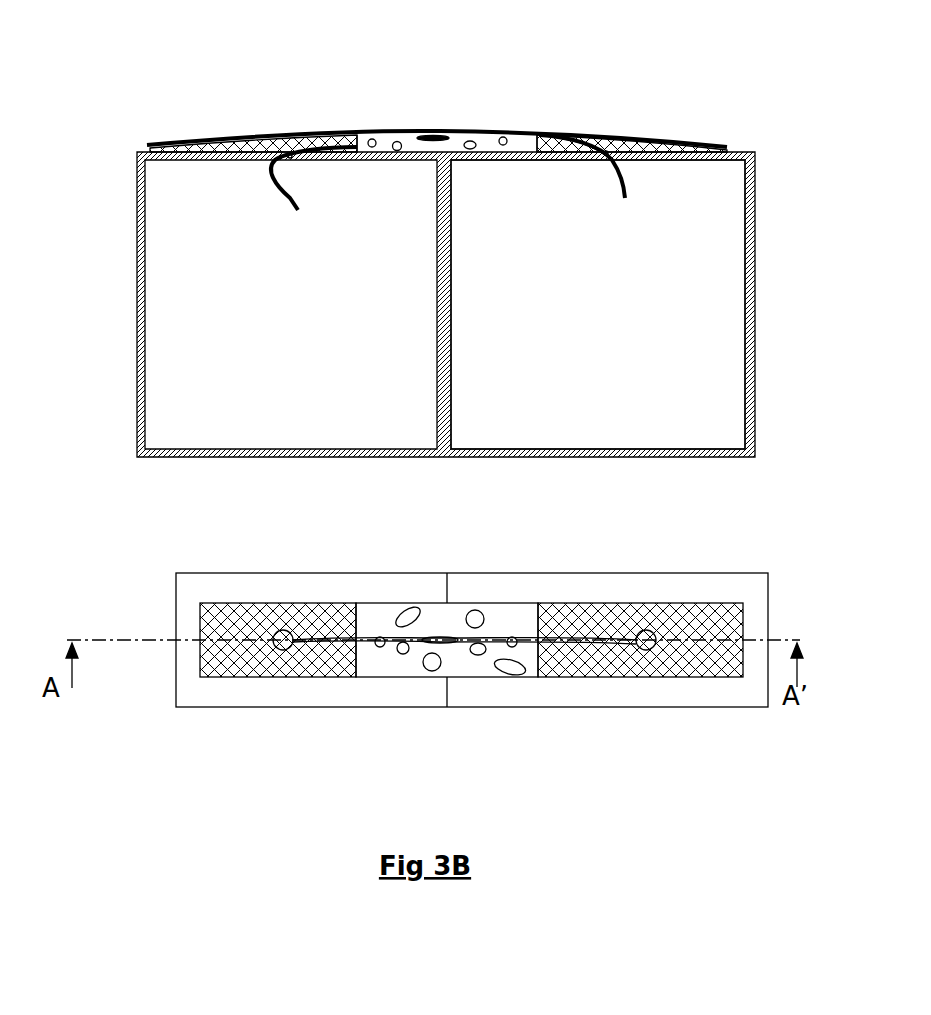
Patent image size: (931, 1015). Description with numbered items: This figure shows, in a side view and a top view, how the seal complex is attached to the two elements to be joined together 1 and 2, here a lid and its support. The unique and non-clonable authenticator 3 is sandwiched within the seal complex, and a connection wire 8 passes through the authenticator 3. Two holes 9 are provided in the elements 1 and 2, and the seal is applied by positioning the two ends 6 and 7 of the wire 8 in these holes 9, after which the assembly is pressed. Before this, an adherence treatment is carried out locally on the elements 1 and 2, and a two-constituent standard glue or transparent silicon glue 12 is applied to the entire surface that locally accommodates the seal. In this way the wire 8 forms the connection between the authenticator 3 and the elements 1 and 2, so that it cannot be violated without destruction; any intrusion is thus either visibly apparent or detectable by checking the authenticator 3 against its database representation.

The element to be joined 1 is at (248, 418).
The element to be joined 2 is at (717, 383).
The authenticator 3 is at (487, 128).
The wire end 6 is at (298, 213).
The wire end 7 is at (623, 203).
The wire 8 is at (617, 175).
The holes 9 is at (606, 153).
The glue 12 is at (276, 152).